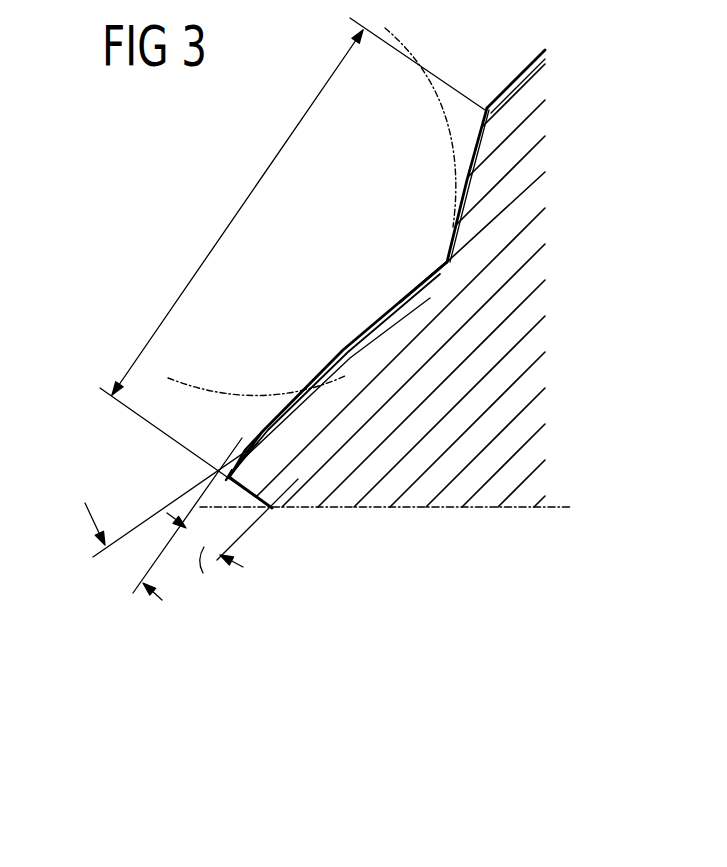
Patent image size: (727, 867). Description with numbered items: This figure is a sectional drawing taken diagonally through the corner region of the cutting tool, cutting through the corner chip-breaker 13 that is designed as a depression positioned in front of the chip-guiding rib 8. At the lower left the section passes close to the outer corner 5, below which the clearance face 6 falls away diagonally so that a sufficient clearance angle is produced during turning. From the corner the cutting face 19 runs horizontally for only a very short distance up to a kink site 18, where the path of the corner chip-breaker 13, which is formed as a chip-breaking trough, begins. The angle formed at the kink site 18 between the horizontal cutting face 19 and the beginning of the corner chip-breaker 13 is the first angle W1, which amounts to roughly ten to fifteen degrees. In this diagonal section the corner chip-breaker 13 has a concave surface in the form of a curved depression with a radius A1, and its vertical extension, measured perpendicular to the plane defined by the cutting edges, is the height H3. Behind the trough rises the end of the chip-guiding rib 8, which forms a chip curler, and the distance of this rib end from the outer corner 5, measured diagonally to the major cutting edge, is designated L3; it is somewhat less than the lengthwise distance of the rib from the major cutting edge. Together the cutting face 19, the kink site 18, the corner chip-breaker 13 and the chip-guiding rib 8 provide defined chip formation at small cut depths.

The outer corner 5 is at (235, 475).
The clearance face 6 is at (245, 488).
The chip-guiding rib 8 is at (524, 72).
The corner chip-breaker 13 is at (420, 256).
The kink site 18 is at (245, 450).
The cutting face 19 is at (343, 352).
The radius of the curved depression A1 is at (452, 188).
The distance of the rib end from the outer corner L3 is at (292, 262).
The first angle W1 is at (171, 516).
The height of the corner chip-breaker H3 is at (215, 526).